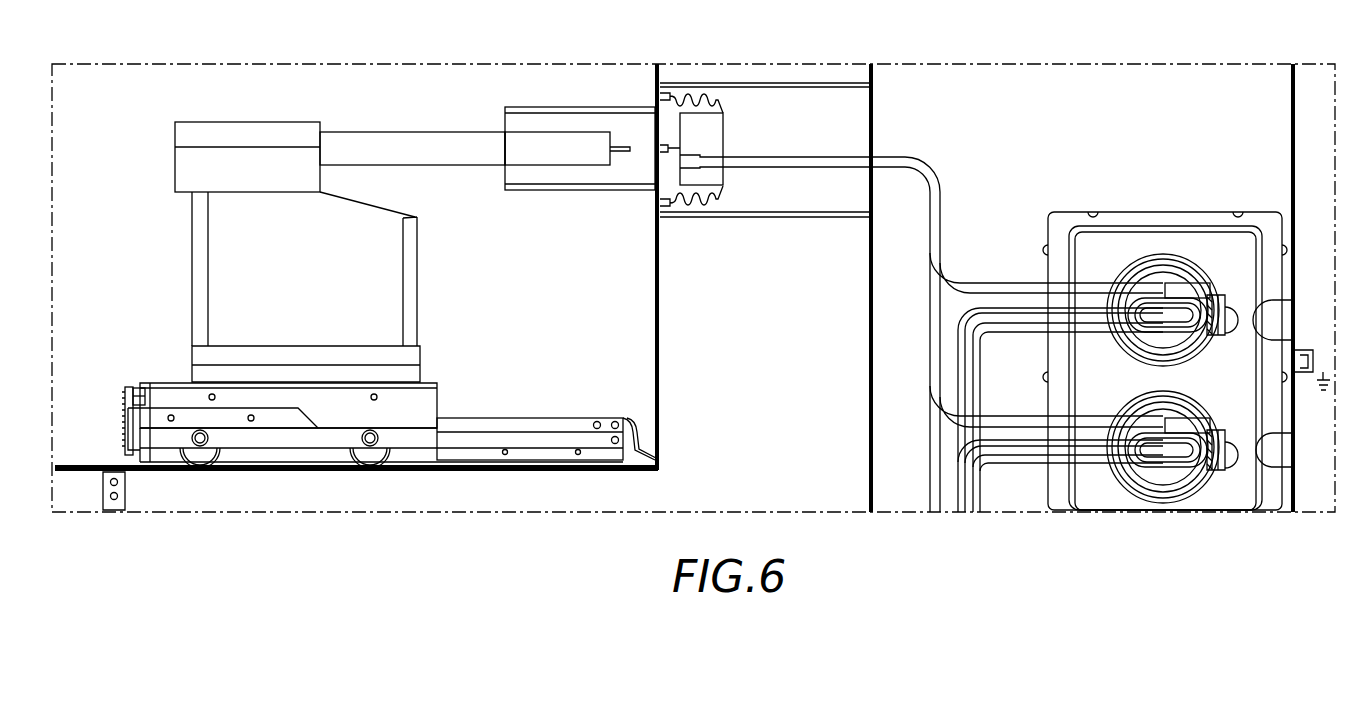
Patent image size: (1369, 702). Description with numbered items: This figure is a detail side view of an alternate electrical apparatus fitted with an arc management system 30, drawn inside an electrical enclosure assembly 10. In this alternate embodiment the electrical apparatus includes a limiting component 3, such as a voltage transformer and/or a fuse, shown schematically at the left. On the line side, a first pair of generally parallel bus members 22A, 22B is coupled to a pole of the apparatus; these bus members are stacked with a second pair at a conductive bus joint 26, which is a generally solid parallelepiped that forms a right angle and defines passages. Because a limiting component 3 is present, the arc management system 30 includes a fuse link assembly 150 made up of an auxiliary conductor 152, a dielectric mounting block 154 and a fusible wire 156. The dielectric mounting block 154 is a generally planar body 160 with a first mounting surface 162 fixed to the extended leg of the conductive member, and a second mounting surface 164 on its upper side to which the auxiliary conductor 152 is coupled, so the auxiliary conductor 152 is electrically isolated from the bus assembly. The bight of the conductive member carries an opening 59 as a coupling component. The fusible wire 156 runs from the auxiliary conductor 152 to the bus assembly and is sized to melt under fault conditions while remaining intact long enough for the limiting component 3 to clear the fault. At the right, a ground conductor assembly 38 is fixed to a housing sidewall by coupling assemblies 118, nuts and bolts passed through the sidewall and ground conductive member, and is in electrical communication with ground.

The limiting component 3 is at (222, 262).
The electrical enclosure assembly 10 is at (1130, 166).
The ground conductor assembly 38 is at (1308, 214).
The fuse link assembly 150 is at (1199, 252).
The dielectric mounting block 154 is at (1188, 293).
The auxiliary conductor 152 is at (1090, 288).
The fusible wire 156 is at (1217, 297).
The bus member 22A is at (1036, 308).
The bus member 22B is at (1036, 332).
The second mounting surface 164 is at (1148, 395).
The opening 59 is at (1180, 348).
The conductive bus joint 26 is at (1213, 328).
The arc management system 30 is at (1295, 405).
The coupling assembly 118 is at (1313, 405).
The planar body 160 is at (1178, 430).
The first mounting surface 162 is at (1180, 445).